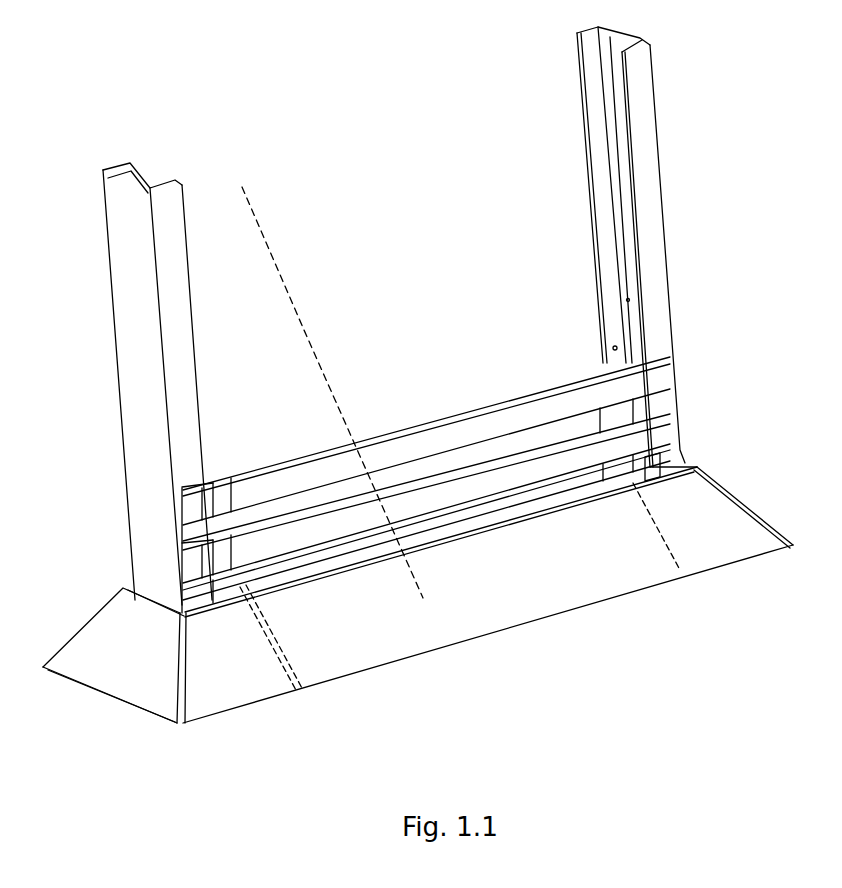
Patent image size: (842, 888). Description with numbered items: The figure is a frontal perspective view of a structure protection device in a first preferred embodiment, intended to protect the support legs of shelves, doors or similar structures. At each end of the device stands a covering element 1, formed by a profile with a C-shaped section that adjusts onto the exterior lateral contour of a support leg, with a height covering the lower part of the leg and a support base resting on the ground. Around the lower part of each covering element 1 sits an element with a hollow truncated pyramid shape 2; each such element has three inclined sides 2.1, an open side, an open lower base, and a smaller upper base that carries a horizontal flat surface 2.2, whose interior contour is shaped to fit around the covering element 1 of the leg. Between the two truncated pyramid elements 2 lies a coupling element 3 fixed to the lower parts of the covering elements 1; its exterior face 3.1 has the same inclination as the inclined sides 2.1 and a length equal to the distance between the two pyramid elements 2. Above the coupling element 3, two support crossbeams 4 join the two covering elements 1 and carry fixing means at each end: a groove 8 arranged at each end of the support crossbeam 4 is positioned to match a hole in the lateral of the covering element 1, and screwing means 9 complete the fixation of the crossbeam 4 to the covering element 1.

The covering element 1 is at (672, 268).
The element with a hollow truncated pyramid shape 2 is at (100, 613).
The inclined side 2.1 is at (225, 668).
The horizontal flat surface 2.2 is at (652, 473).
The coupling element 3 is at (540, 620).
The exterior face 3.1 is at (321, 371).
The support crossbeam 4 is at (483, 408).
The groove 8 is at (186, 567).
The screwing means 9 is at (198, 565).